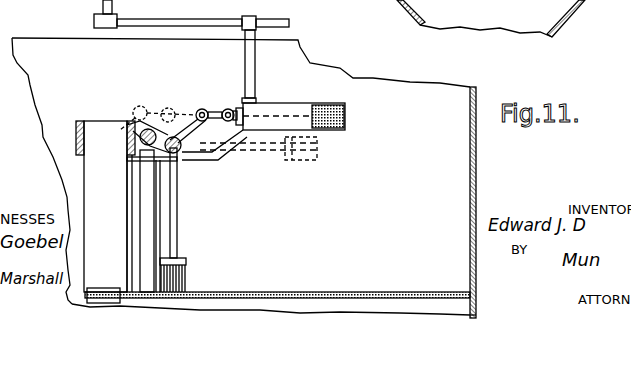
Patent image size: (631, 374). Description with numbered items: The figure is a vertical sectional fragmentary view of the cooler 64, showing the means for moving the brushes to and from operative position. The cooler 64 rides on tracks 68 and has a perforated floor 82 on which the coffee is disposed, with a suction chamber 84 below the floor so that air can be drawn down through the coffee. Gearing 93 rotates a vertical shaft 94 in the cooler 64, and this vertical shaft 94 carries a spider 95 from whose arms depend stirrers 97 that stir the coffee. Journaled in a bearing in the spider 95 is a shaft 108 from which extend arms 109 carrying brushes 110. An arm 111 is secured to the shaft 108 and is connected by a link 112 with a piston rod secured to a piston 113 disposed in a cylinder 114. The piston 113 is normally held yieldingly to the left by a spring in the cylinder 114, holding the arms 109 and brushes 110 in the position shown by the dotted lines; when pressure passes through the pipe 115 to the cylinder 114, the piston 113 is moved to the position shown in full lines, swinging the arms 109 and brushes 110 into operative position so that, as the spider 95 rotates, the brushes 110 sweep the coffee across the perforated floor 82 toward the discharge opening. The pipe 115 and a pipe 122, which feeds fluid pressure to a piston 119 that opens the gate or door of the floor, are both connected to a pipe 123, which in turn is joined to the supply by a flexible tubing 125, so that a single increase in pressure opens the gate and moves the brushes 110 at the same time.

The cooler 64 is at (470, 87).
The tracks 68 is at (502, 18).
The perforated floor 82 is at (396, 292).
The suction chamber 84 is at (460, 303).
The gearing 93 is at (384, 12).
The vertical shaft 94 is at (89, 121).
The spider 95 is at (144, 128).
The stirrers 97 is at (136, 222).
The shaft 108 is at (184, 157).
The arms 109 is at (182, 226).
The brushes 110 is at (187, 262).
The arm 111 is at (190, 113).
The link 112 is at (203, 110).
The piston 113 is at (316, 104).
The cylinder 114 is at (327, 130).
The pipe 115 is at (246, 58).
The piston 119 is at (241, 153).
The pipe 122 is at (289, 23).
The pipe 123 is at (168, 13).
The flexible tubing 125 is at (103, 6).